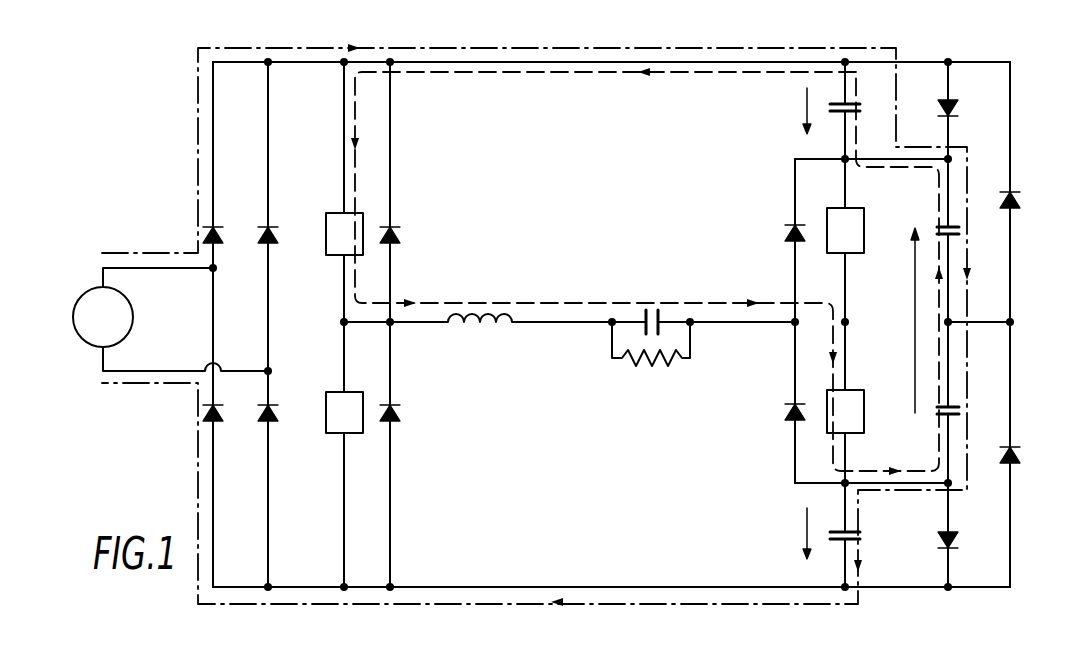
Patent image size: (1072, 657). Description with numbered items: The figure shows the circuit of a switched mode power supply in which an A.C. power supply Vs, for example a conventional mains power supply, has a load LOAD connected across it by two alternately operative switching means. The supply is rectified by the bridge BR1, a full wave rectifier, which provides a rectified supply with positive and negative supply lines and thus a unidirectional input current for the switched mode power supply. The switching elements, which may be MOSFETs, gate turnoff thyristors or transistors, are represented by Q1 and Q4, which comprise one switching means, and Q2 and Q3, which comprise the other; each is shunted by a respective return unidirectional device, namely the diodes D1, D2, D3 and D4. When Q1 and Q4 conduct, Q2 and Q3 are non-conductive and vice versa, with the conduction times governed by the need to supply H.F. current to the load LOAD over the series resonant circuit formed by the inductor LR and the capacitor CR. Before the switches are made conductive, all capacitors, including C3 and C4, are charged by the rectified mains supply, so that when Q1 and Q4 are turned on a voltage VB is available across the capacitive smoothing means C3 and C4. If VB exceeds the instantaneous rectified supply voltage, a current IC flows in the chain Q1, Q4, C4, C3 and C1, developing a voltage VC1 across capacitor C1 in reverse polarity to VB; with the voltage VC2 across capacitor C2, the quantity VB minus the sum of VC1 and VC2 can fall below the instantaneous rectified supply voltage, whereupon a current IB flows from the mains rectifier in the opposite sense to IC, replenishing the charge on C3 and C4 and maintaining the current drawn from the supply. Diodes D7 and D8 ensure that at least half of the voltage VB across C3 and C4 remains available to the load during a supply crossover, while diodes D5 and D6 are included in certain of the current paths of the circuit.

The A.C. power supply Vs is at (170, 319).
The bridge BR1 is at (240, 324).
The switching element Q1 is at (344, 192).
The switching element Q2 is at (344, 454).
The switching element Q3 is at (845, 240).
The switching element Q4 is at (845, 402).
The return unidirectional device D1 is at (408, 192).
The return unidirectional device D2 is at (408, 454).
The return unidirectional device D3 is at (778, 240).
The return unidirectional device D4 is at (775, 402).
The diode D5 is at (932, 110).
The diode D6 is at (933, 535).
The diode D7 is at (1029, 192).
The diode D8 is at (1029, 454).
The capacitor C1 is at (863, 110).
The capacitor C2 is at (863, 535).
The capacitive smoothing means C3 is at (957, 240).
The capacitive smoothing means C4 is at (957, 402).
The series resonant inductor LR is at (478, 334).
The series resonant capacitor CR is at (703, 306).
The load LOAD is at (651, 359).
The voltage across capacitor C1 VC1 is at (801, 109).
The voltage across capacitor C2 VC2 is at (801, 534).
The voltage across capacitive smoothing means VB is at (902, 320).
The current from mains rectifier IB is at (536, 313).
The current in switching chain IC is at (647, 271).